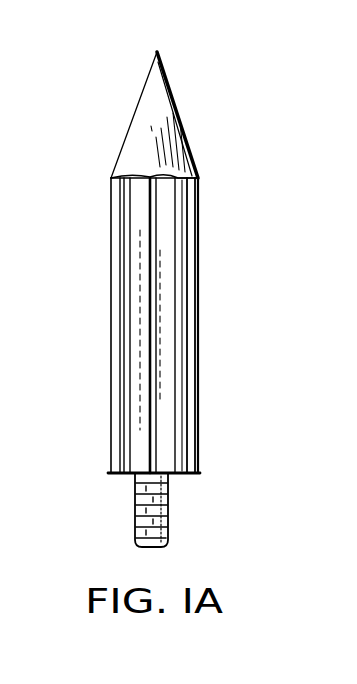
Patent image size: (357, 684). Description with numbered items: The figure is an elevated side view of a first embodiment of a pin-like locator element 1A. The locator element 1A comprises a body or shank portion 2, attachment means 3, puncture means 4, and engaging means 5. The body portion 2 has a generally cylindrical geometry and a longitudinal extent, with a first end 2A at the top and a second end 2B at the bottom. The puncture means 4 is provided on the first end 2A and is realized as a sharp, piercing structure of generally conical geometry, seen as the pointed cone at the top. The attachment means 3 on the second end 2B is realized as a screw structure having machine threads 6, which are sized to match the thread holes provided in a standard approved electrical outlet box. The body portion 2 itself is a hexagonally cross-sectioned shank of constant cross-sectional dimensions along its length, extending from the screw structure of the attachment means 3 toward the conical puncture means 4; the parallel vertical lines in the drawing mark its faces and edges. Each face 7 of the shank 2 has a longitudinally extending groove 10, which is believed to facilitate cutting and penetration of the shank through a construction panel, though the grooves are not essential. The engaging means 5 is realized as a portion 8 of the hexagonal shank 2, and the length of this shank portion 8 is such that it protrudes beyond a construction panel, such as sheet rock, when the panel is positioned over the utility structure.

The locator element 1A is at (228, 74).
The body or shank portion 2 is at (148, 320).
The first end 2A is at (108, 183).
The second end 2B is at (103, 462).
The attachment means 3 is at (142, 510).
The puncture means 4 is at (157, 52).
The engaging means 5 is at (125, 200).
The machine threads 6 is at (168, 504).
The face 7 is at (133, 318).
The shank portion 8 is at (194, 203).
The longitudinally extending groove 10 is at (147, 266).